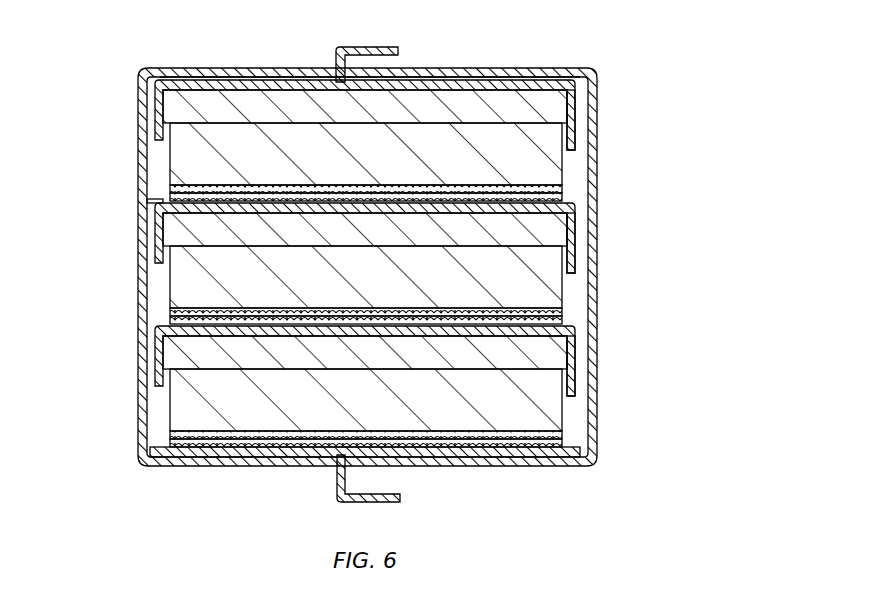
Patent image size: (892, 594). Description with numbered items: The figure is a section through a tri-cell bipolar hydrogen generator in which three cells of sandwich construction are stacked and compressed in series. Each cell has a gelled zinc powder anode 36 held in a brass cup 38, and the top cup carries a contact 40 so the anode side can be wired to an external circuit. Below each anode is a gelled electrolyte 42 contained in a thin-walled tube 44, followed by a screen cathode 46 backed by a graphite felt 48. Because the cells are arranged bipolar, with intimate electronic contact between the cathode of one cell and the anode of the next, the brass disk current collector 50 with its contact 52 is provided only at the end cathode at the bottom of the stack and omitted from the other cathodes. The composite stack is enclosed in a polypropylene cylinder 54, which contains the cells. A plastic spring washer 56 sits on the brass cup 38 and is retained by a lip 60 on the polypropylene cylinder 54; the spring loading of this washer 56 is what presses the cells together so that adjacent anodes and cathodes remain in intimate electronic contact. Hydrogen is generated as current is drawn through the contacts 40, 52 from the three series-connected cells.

The gelled zinc powder anode 36 is at (548, 106).
The brass cup 38 is at (245, 88).
The contact 40 is at (345, 47).
The gelled electrolyte 42 is at (535, 155).
The thin-walled tube 44 is at (562, 172).
The screen cathode 46 is at (225, 189).
The graphite felt 48 is at (232, 198).
The brass disk current collector 50 is at (240, 460).
The contact 52 is at (337, 497).
The polypropylene cylinder 54 is at (150, 208).
The plastic spring washer 56 is at (490, 77).
The lip 60 is at (151, 70).